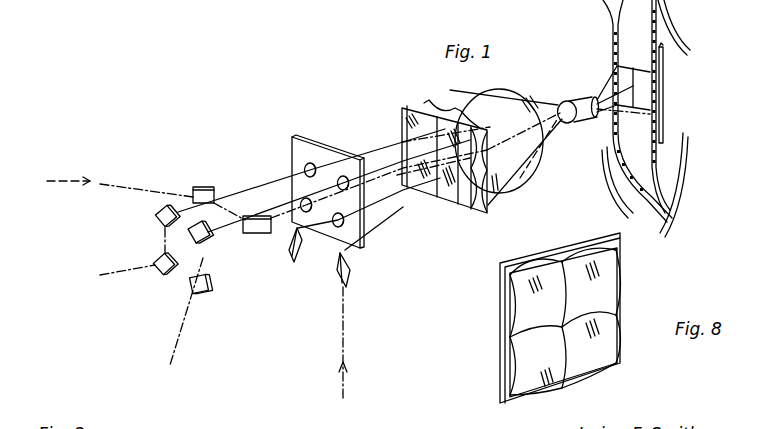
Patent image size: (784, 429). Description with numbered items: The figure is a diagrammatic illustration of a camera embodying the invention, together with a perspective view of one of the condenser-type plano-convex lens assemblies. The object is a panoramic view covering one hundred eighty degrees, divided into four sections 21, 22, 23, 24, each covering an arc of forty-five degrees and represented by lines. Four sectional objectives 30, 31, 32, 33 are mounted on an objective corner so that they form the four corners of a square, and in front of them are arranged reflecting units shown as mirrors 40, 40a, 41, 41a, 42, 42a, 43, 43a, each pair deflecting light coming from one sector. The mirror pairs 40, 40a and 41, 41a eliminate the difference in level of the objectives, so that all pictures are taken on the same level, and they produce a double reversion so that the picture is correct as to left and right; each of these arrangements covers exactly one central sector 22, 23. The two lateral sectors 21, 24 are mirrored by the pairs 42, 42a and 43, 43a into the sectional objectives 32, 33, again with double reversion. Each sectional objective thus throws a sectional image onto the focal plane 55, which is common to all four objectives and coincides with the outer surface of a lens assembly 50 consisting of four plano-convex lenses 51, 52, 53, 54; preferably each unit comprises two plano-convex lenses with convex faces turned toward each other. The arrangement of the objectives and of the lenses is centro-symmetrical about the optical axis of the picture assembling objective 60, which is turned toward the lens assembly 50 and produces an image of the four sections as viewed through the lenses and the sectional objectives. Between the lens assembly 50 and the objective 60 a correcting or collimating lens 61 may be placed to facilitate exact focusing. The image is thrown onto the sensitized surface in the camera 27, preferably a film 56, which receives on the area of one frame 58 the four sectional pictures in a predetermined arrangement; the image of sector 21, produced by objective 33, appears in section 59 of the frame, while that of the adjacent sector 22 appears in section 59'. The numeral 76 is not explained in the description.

In FIG. 1, the lateral sector of the panoramic view 21 is at (344, 328).
In FIG. 1, the central sector of the panoramic view 22 is at (181, 337).
In FIG. 1, the central sector of the panoramic view 23 is at (110, 274).
In FIG. 1, the lateral sector of the panoramic view 24 is at (113, 187).
In FIG. 1, the camera 27 is at (687, 205).
In FIG. 1, the sectional objective 30 is at (306, 166).
In FIG. 1, the sectional objective 31 is at (343, 177).
In FIG. 1, the sectional objective 32 is at (302, 200).
In FIG. 1, the sectional objective 33 is at (345, 222).
In FIG. 1, the mirror 40 is at (157, 221).
In FIG. 1, the mirror 40a is at (164, 276).
In FIG. 1, the mirror 41 is at (206, 238).
In FIG. 1, the mirror 41a is at (211, 284).
In FIG. 1, the mirror 42 is at (259, 234).
In FIG. 1, the mirror 42a is at (198, 187).
In FIG. 1, the mirror 43 is at (296, 252).
In FIG. 1, the mirror 43a is at (351, 272).
In FIG. 1, the lens assembly 50 is at (400, 104).
In FIG. 1, the plano-convex lens 51 is at (407, 123).
In FIG. 8, the plano-convex lens 51 is at (605, 284).
In FIG. 1, the plano-convex lens 52 is at (488, 155).
In FIG. 8, the plano-convex lens 52 is at (523, 305).
In FIG. 1, the plano-convex lens 53 is at (418, 182).
In FIG. 8, the plano-convex lens 53 is at (597, 362).
In FIG. 1, the plano-convex lens 54 is at (452, 182).
In FIG. 8, the plano-convex lens 54 is at (530, 393).
In FIG. 1, the focal plane 55 is at (470, 200).
In FIG. 1, the film 56 is at (640, 153).
In FIG. 1, the frame 58 is at (647, 105).
In FIG. 1, the frame section 59 is at (669, 74).
In FIG. 1, the frame section 59' is at (677, 119).
In FIG. 1, the picture assembling objective 60 is at (579, 122).
In FIG. 1, the correcting or collimating lens 61 is at (523, 177).
In FIG. 1, the image frame 76 is at (615, 72).